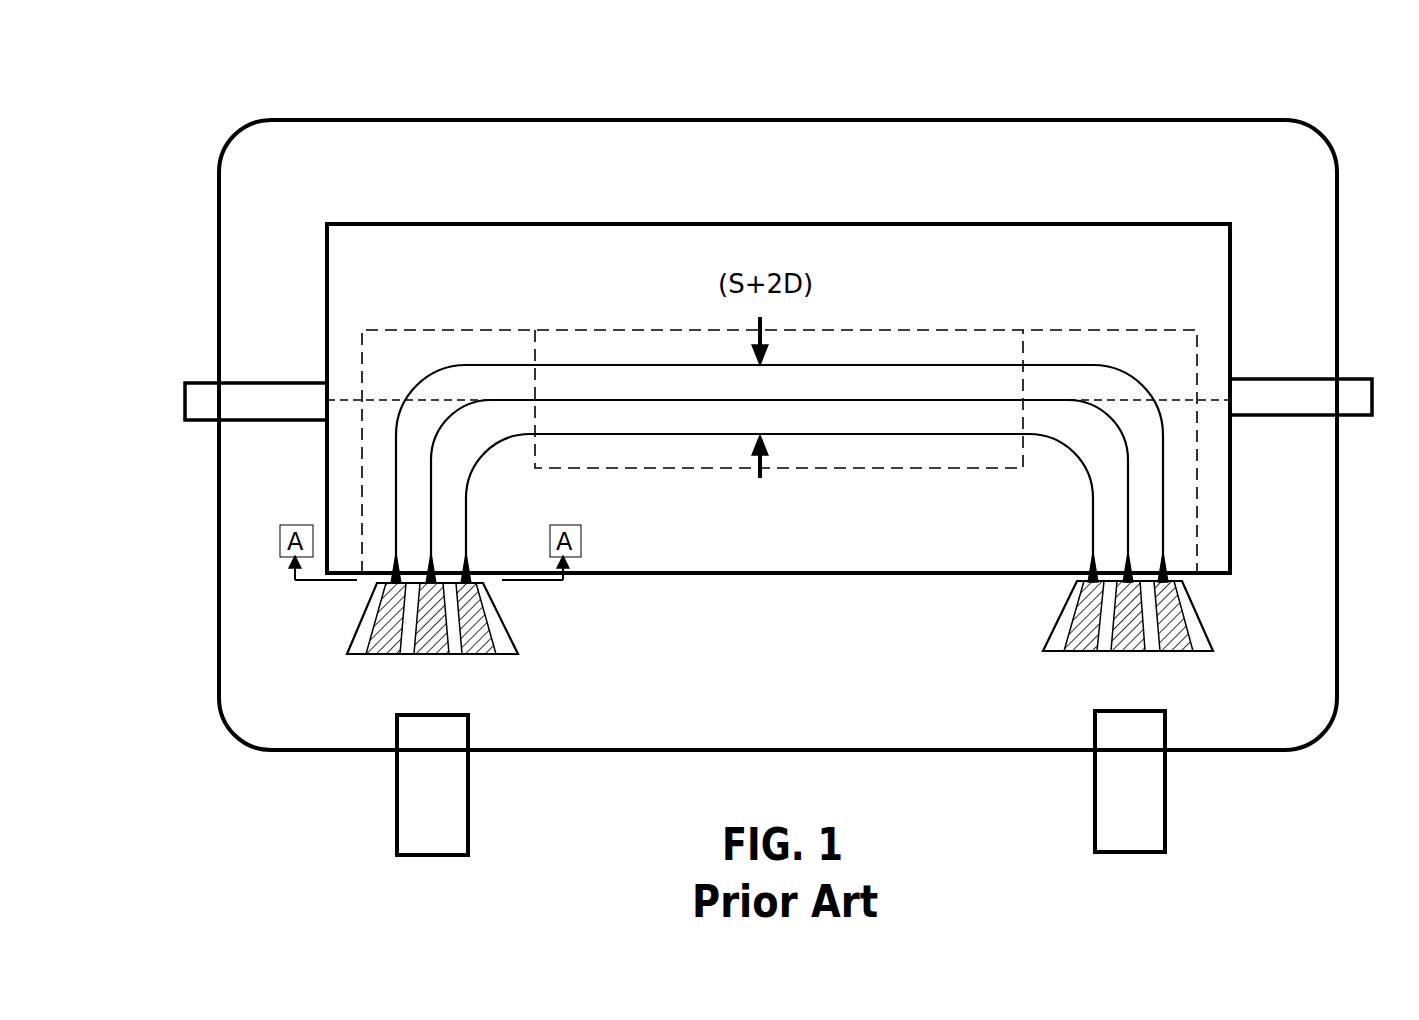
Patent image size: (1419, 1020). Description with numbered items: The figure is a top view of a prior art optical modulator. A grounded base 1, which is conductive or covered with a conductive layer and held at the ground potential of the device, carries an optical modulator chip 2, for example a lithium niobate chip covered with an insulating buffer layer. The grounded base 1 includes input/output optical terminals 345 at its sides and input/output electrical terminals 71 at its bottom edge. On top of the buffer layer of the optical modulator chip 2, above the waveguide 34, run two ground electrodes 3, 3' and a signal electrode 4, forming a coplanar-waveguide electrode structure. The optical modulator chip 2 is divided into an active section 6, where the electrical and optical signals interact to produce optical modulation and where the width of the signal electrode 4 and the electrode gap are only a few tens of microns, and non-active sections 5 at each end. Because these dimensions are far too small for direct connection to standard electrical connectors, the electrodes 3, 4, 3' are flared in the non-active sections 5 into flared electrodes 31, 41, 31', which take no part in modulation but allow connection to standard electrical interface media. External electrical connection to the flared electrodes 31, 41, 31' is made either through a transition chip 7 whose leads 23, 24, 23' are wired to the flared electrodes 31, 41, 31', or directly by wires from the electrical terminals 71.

The grounded base 1 is at (1195, 153).
The optical modulator chip 2 is at (1057, 260).
The ground electrode 3 is at (779, 508).
The ground electrode 3' is at (779, 413).
The signal electrode 4 is at (895, 398).
The non-active section 5 is at (395, 350).
The active section 6 is at (673, 348).
The transition chip 7 is at (492, 610).
The lead 23 is at (780, 644).
The lead 23' is at (775, 644).
The lead 24 is at (431, 655).
The flared ground electrode 31 is at (779, 505).
The flared ground electrode 31' is at (778, 536).
The waveguide 34 is at (377, 398).
The flared signal electrode 41 is at (431, 567).
The input/output electrical terminal 71 is at (447, 784).
The input/output optical terminal 345 is at (252, 398).